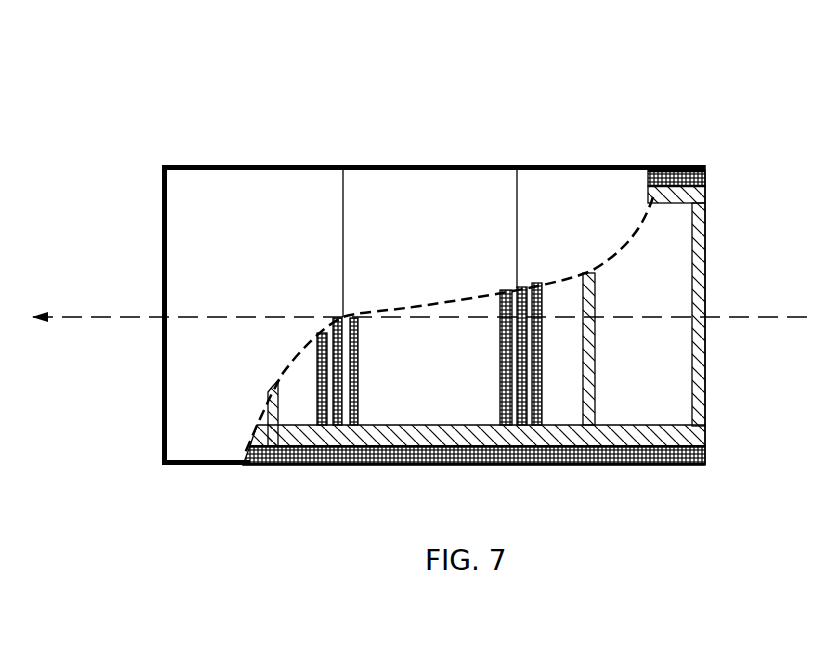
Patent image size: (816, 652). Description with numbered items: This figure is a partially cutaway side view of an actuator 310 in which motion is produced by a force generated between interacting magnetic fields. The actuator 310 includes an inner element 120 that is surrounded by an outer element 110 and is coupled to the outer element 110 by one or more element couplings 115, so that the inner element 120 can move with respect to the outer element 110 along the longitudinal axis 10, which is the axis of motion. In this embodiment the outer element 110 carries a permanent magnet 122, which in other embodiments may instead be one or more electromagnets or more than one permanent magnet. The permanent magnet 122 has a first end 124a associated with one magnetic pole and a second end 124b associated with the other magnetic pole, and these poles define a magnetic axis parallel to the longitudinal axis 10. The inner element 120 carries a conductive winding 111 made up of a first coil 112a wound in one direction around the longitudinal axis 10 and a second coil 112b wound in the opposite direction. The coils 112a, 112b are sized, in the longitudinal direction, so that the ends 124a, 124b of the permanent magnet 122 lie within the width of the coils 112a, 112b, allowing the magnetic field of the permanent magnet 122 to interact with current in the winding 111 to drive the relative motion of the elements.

The actuator 310 is at (730, 72).
The longitudinal axis 10 is at (740, 318).
The outer element 110 is at (163, 200).
The inner element 120 is at (693, 296).
The conductive winding 111 is at (308, 465).
The element couplings 115 is at (270, 442).
The first coil 112a is at (345, 440).
The second coil 112b is at (505, 440).
The permanent magnet 122 is at (418, 186).
The first end 124a is at (355, 177).
The second end 124b is at (503, 178).